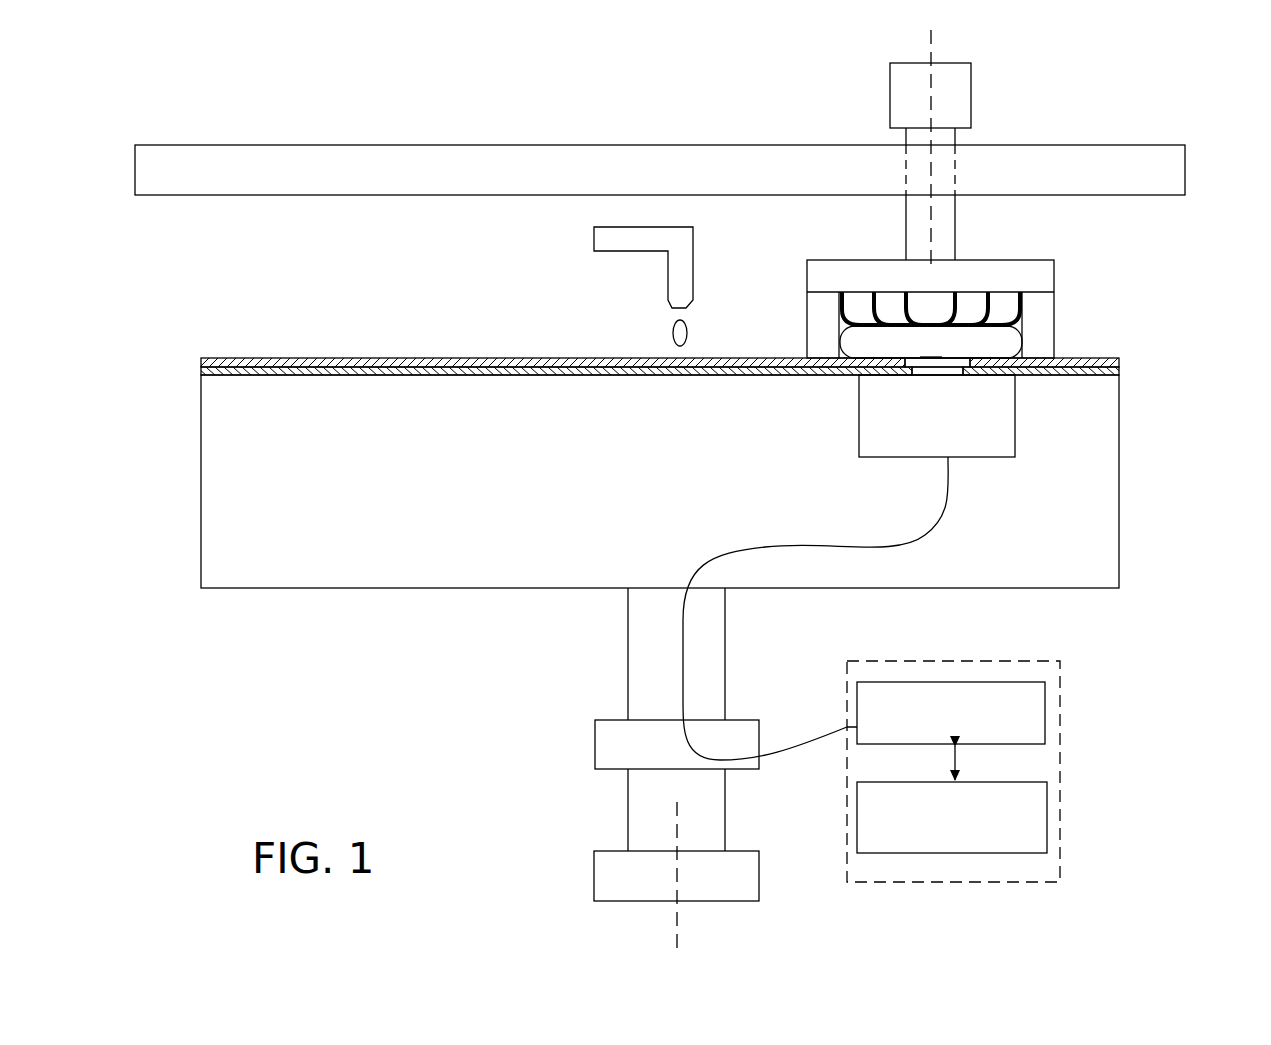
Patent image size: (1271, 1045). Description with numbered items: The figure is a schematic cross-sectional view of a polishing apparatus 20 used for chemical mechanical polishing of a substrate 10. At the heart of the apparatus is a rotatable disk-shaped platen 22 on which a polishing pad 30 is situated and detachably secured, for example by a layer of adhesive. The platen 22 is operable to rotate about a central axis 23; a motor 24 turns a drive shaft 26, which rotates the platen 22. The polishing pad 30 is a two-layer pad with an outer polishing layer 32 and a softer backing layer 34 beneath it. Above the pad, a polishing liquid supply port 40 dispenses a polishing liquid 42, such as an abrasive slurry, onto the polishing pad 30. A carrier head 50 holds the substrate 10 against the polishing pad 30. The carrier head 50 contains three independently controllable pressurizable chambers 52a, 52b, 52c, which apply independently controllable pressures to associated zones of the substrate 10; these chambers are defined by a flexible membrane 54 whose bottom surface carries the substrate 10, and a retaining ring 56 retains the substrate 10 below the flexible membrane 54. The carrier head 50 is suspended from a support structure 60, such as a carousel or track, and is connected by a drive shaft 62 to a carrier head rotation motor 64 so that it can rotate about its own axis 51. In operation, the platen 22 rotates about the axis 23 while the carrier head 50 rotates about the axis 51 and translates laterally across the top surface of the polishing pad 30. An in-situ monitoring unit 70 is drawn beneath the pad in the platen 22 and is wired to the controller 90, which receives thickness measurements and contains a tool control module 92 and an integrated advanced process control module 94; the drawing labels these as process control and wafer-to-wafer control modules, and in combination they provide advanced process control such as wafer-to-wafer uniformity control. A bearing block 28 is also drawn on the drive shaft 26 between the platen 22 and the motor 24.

The substrate 10 is at (931, 342).
The polishing apparatus 20 is at (190, 100).
The platen 22 is at (1119, 512).
The axis 23 is at (678, 925).
The motor 24 is at (759, 885).
The drive shaft 26 is at (725, 663).
The bearing 28 is at (595, 757).
The polishing pad 30 is at (728, 385).
The outer polishing layer 32 is at (1119, 360).
The backing layer 34 is at (1119, 371).
The polishing liquid supply port 40 is at (668, 269).
The polishing liquid 42 is at (673, 334).
The carrier head 50 is at (786, 306).
The axis 51 is at (931, 44).
The pressurizable chamber 52a is at (932, 308).
The pressurizable chamber 52b is at (972, 308).
The pressurizable chamber 52c is at (1007, 308).
The flexible membrane 54 is at (997, 333).
The retaining ring 56 is at (1054, 325).
The support structure 60 is at (1152, 145).
The drive shaft 62 is at (917, 238).
The carrier head rotation motor 64 is at (890, 106).
The in-situ monitoring system 70 is at (853, 415).
The controller 90 is at (1003, 771).
The tool control module 92 is at (1045, 715).
The integrated advanced process control module 94 is at (1047, 813).